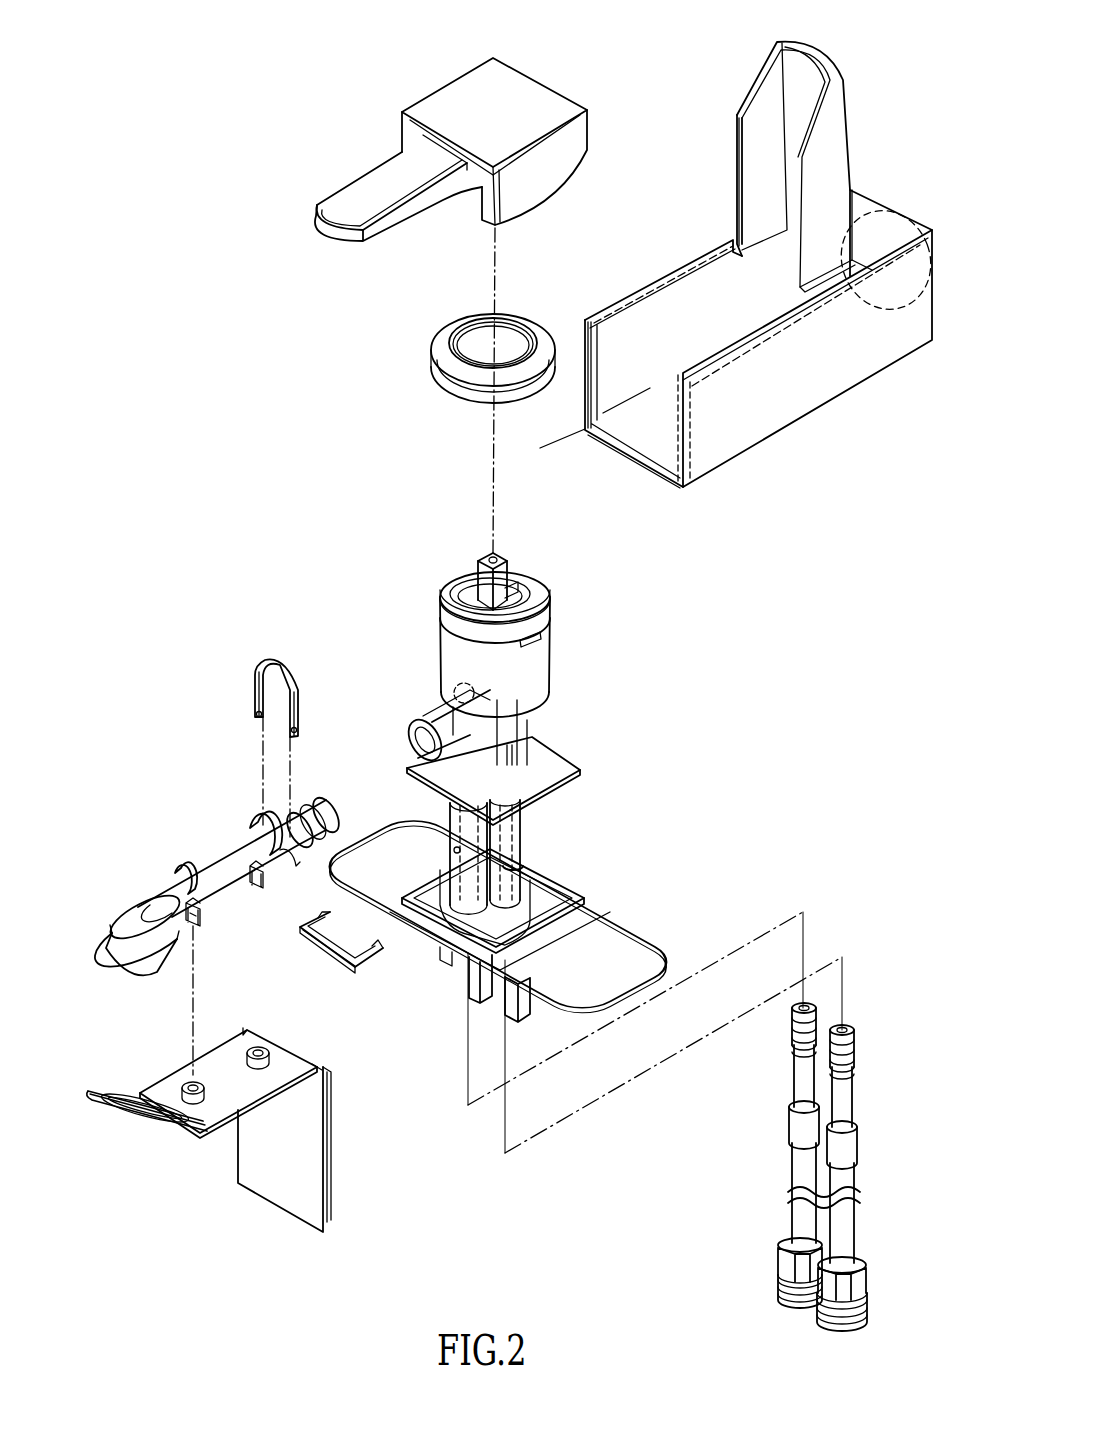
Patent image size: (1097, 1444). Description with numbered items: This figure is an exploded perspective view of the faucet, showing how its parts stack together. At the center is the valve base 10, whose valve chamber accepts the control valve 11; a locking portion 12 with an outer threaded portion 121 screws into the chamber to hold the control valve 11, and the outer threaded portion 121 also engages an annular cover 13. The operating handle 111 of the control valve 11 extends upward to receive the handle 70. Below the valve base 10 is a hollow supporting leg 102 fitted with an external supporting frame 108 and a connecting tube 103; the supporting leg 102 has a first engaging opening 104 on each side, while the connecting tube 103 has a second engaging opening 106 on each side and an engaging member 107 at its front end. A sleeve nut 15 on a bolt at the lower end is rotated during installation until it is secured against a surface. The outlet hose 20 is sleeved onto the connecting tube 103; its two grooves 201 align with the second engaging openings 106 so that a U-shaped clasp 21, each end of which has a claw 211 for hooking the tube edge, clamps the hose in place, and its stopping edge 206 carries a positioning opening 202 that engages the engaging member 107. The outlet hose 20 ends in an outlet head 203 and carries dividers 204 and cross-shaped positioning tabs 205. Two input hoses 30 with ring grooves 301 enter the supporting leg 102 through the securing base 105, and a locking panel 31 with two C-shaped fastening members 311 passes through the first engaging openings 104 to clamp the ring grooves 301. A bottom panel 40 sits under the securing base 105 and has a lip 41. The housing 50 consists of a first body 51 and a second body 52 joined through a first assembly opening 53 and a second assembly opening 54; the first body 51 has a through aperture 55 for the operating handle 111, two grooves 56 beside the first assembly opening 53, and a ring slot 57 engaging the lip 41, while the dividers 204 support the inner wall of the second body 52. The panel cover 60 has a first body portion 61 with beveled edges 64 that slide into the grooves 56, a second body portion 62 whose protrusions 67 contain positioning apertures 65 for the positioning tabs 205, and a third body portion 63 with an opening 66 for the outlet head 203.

The valve base 10 is at (556, 656).
The control valve 11 is at (560, 568).
The locking portion 12 is at (445, 595).
The outer threaded portion 121 is at (442, 624).
The annular cover 13 is at (445, 336).
The sleeve nut 15 is at (540, 1020).
The outlet hose 20 is at (128, 895).
The U-shaped clasp 21 is at (255, 672).
The groove 201 is at (338, 808).
The positioning opening 202 is at (405, 866).
The outlet head 203 is at (125, 970).
The dividers 204 is at (185, 868).
The cross-shaped positioning tabs 205 is at (235, 906).
The stopping edge 206 is at (268, 820).
The claw 211 is at (256, 716).
The input hose 30 is at (776, 1233).
The ring groove 301 is at (794, 1020).
The locking panel 31 is at (320, 948).
The C-shaped fastening members 311 is at (350, 930).
The bottom panel 40 is at (676, 962).
The lip 41 is at (540, 935).
The housing 50 is at (860, 387).
The first body 51 is at (740, 442).
The second body 52 is at (838, 112).
The first assembly opening 53 is at (670, 298).
The second assembly opening 54 is at (748, 145).
The through aperture 55 is at (898, 212).
The grooves 56 is at (598, 302).
The ring slot 57 is at (596, 455).
The panel cover 60 is at (348, 1230).
The first body portion 61 is at (240, 1160).
The second body portion 62 is at (258, 1105).
The third body portion 63 is at (98, 1094).
The beveled edge 64 is at (332, 1135).
The positioning apertures 65 is at (190, 1080).
The opening 66 is at (118, 1120).
The protrusions 67 is at (323, 1078).
The handle 70 is at (400, 93).
The supporting leg 102 is at (516, 765).
The connecting tube 103 is at (460, 692).
The first engaging opening 104 is at (455, 846).
The securing base 105 is at (586, 898).
The second engaging opening 106 is at (420, 726).
The engaging member 107 is at (402, 746).
The external supporting frame 108 is at (548, 740).
The operating handle 111 is at (487, 557).